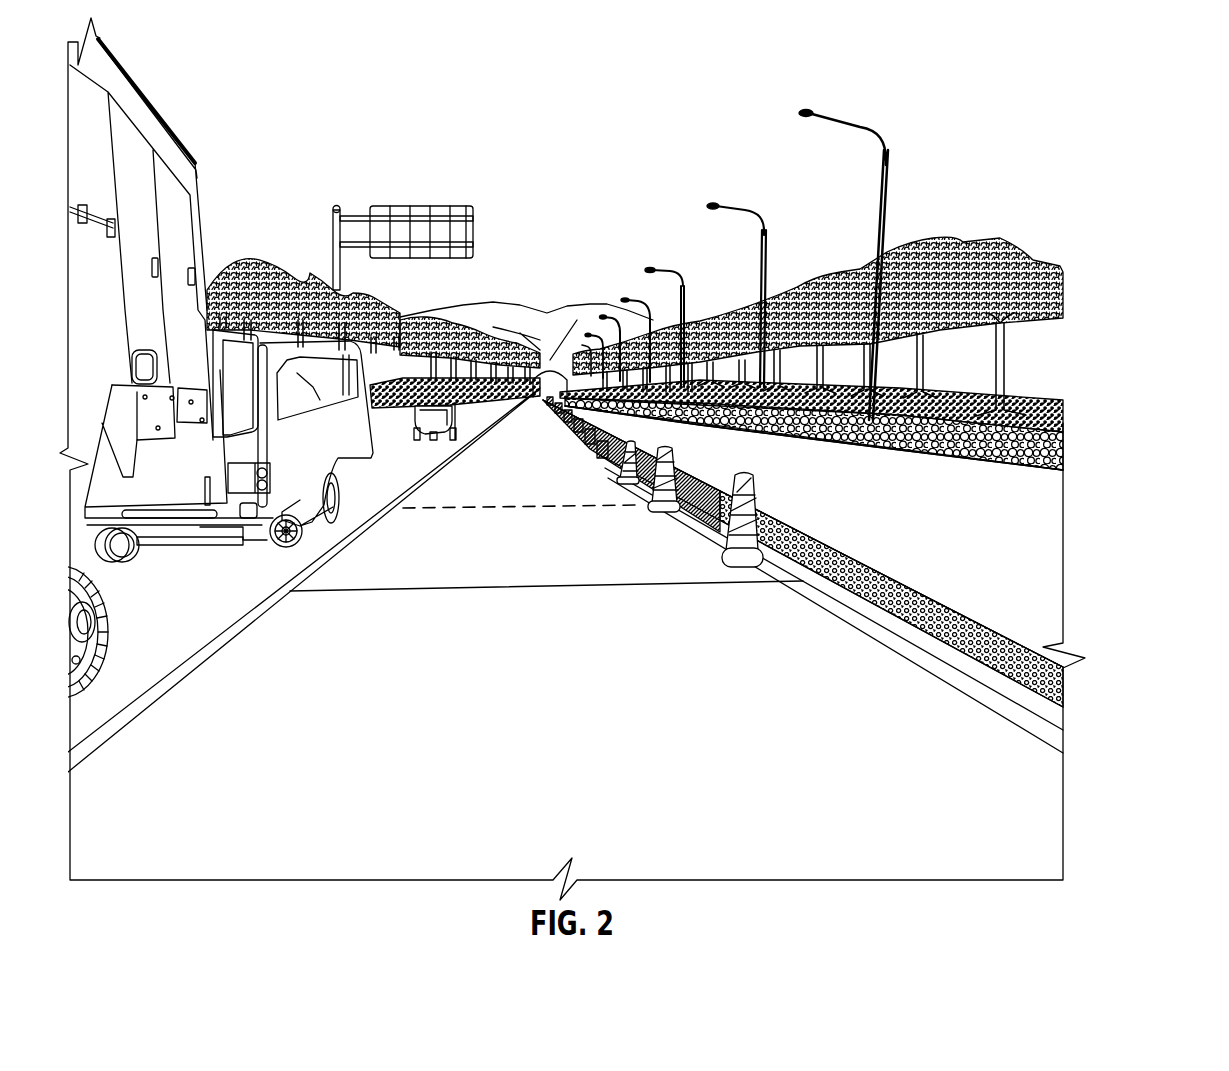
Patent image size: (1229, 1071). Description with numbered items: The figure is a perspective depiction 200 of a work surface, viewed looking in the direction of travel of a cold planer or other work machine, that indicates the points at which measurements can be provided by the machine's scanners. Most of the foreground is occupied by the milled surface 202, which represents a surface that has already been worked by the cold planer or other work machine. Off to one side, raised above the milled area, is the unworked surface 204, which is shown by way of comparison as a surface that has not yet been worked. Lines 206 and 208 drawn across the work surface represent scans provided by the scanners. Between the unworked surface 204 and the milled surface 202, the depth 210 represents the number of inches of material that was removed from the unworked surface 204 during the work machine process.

The perspective depiction 200 is at (1127, 345).
The milled surface 202 is at (1057, 823).
The unworked surface 204 is at (1053, 513).
The scan line 206 is at (491, 507).
The scan line 208 is at (697, 586).
The depth 210 is at (880, 581).